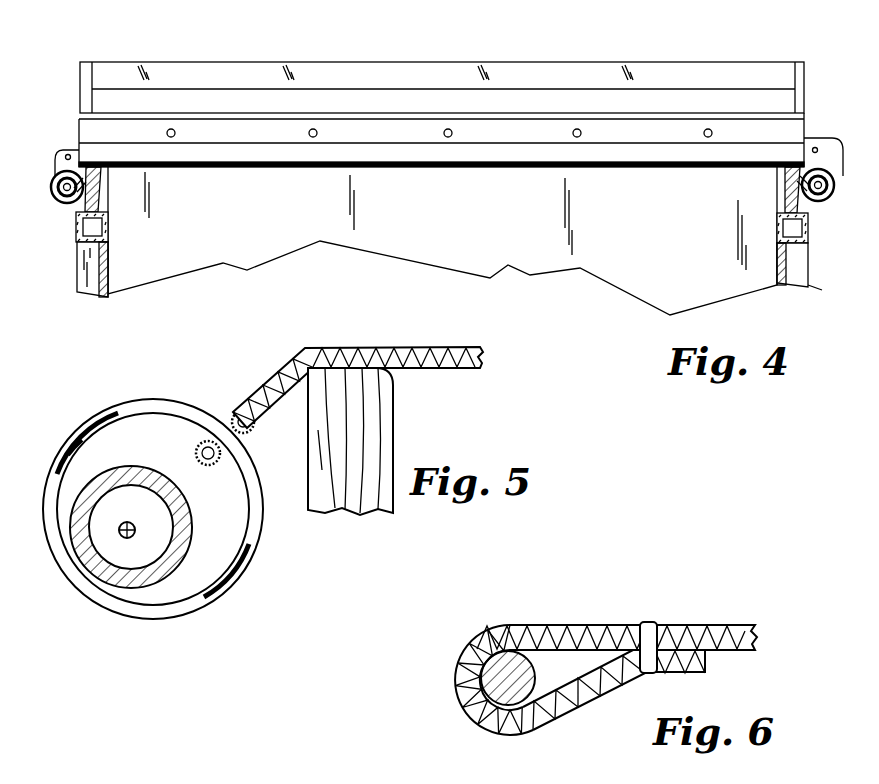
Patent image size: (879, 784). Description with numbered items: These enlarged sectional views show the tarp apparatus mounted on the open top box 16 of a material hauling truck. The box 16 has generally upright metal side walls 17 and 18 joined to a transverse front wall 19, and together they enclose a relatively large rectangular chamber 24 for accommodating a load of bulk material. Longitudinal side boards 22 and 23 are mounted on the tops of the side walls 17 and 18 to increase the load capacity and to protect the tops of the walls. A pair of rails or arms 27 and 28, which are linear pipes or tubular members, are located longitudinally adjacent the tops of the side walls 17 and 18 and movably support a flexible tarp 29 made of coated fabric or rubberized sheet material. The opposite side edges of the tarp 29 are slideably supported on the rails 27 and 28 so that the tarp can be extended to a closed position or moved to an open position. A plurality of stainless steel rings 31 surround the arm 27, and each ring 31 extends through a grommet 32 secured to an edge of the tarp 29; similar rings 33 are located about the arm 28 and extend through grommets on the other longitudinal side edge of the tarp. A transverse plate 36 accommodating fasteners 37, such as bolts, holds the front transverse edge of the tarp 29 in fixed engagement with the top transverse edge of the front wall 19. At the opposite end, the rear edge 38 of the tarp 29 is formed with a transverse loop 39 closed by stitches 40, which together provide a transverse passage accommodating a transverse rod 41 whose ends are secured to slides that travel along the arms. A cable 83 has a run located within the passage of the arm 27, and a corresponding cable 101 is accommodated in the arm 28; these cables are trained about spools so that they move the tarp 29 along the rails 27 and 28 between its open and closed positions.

In FIG. 4, the box 16 is at (66, 280).
In FIG. 4, the side wall 17 is at (780, 261).
In FIG. 4, the side wall 18 is at (107, 261).
In FIG. 4, the front wall 19 is at (687, 292).
In FIG. 4, the side board 22 is at (782, 194).
In FIG. 4, the side board 23 is at (100, 186).
In FIG. 5, the side board 23 is at (360, 408).
In FIG. 4, the chamber 24 is at (442, 241).
In FIG. 4, the rail 27 is at (846, 176).
In FIG. 5, the rail 27 is at (118, 475).
In FIG. 4, the rail 28 is at (61, 172).
In FIG. 4, the tarp 29 is at (430, 171).
In FIG. 5, the tarp 29 is at (400, 347).
In FIG. 6, the tarp 29 is at (730, 627).
In FIG. 4, the ring 31 is at (838, 166).
In FIG. 5, the ring 31 is at (138, 612).
In FIG. 5, the grommet 32 is at (238, 410).
In FIG. 4, the ring 33 is at (55, 178).
In FIG. 4, the transverse plate 36 is at (343, 130).
In FIG. 4, the fasteners 37 is at (312, 129).
In FIG. 6, the rear edge 38 is at (483, 632).
In FIG. 6, the transverse loop 39 is at (550, 708).
In FIG. 6, the stitches 40 is at (650, 622).
In FIG. 6, the transverse rod 41 is at (492, 686).
In FIG. 4, the cable 83 is at (100, 204).
In FIG. 5, the cable 83 is at (137, 542).
In FIG. 4, the cable 101 is at (793, 210).